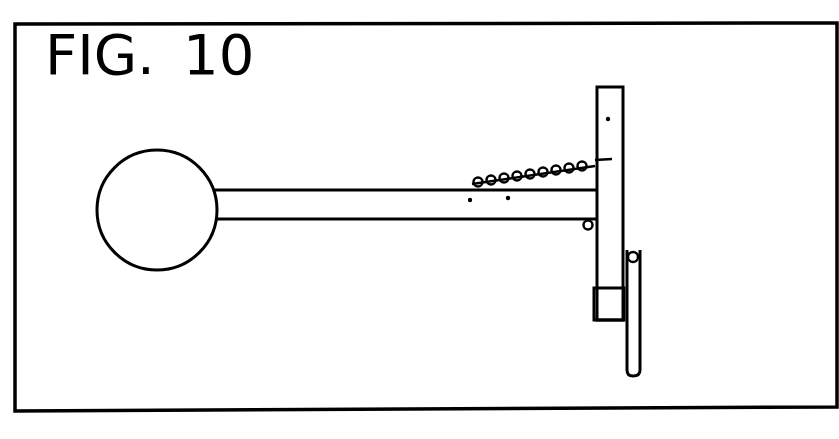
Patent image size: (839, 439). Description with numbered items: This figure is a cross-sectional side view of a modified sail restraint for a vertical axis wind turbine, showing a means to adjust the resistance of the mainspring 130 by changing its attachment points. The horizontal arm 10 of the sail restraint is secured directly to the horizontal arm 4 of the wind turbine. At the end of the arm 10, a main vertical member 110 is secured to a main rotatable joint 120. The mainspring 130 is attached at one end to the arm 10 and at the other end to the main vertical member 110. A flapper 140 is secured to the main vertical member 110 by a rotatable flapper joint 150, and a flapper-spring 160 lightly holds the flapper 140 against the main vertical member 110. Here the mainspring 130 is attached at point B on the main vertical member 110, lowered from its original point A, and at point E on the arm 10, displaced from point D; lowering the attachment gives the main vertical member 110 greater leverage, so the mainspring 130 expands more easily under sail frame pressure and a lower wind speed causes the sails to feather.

The horizontal arm of the wind turbine 4 is at (97, 226).
The arm 10 is at (300, 190).
The main vertical member 110 is at (623, 138).
The main rotatable joint 120 is at (584, 229).
The mainspring 130 is at (533, 175).
The flapper 140 is at (643, 341).
The rotatable flapper joint 150 is at (635, 251).
The flapper-spring 160 is at (596, 290).